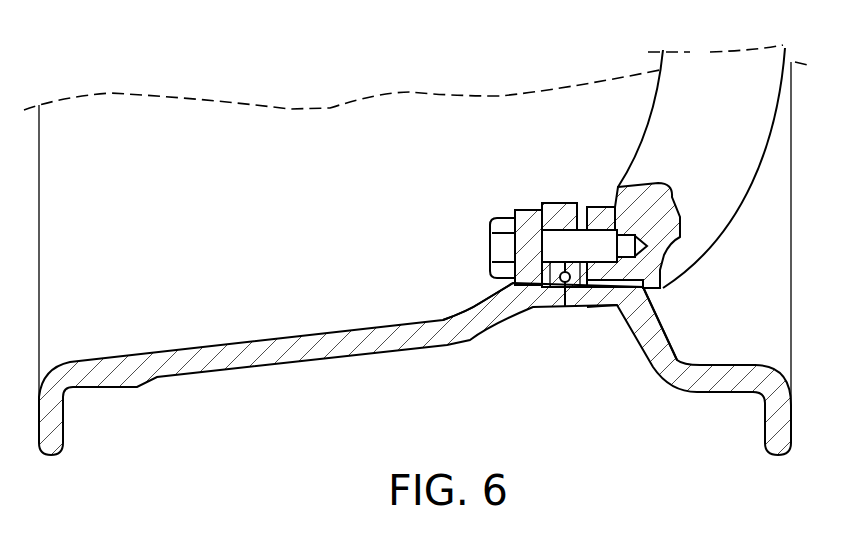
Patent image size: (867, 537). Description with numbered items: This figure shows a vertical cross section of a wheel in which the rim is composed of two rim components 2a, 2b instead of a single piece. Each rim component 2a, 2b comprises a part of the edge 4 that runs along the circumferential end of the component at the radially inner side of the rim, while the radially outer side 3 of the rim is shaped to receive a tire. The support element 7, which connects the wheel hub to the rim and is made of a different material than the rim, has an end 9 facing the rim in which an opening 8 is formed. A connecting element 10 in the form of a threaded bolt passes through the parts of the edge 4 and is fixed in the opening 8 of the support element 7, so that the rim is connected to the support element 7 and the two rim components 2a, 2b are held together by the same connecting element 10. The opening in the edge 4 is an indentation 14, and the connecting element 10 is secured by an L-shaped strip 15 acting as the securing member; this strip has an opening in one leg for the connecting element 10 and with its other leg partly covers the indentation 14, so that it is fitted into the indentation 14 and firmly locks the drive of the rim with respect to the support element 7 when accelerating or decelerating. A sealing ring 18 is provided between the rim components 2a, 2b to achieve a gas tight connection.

The support element 7 is at (693, 65).
The opening 8 is at (633, 235).
The L-shaped strip 15 is at (527, 215).
The connecting element 10 is at (556, 238).
The indentation 14 is at (583, 210).
The radially outer side 3 is at (445, 393).
The rim component 2a is at (487, 318).
The rim component 2b is at (653, 342).
The edge 4 is at (548, 280).
The sealing ring 18 is at (565, 284).
The end 9 is at (625, 285).